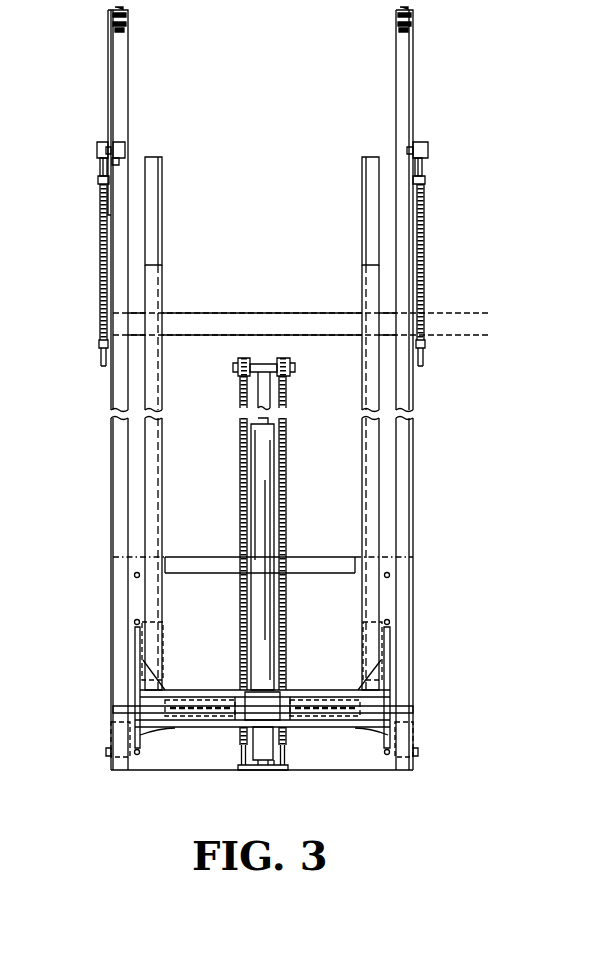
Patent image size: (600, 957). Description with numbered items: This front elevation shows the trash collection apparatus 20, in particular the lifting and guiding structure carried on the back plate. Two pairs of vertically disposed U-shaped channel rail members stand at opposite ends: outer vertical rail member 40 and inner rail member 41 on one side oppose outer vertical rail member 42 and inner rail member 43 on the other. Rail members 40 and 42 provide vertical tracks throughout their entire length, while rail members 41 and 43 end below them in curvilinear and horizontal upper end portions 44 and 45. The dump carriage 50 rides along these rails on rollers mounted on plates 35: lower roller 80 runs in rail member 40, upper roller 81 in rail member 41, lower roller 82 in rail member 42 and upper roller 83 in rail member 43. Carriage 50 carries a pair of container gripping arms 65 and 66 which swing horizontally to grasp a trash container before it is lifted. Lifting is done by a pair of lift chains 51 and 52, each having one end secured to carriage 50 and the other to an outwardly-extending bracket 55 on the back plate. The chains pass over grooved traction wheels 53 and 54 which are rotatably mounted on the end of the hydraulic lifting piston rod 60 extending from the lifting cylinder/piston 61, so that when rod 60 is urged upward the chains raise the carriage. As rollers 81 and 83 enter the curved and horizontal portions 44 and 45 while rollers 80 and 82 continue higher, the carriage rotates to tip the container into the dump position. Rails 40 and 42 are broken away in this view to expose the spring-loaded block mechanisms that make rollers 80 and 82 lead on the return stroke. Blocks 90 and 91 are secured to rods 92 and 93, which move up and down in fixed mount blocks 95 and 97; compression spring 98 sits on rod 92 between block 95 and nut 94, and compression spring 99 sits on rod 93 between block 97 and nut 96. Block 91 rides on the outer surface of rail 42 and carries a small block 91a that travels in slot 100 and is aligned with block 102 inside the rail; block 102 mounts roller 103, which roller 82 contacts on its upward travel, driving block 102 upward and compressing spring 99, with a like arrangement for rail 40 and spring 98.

The trash collection apparatus 20 is at (444, 100).
The plates 35 is at (134, 656).
The vertical rail member 40 is at (394, 48).
The rail member 41 is at (372, 285).
The vertical rail member 42 is at (128, 52).
The rail member 43 is at (150, 285).
The curvilinear and horizontal upper end portion 44 is at (372, 160).
The curvilinear and horizontal upper end portion 45 is at (152, 160).
The dump carriage 50 is at (323, 728).
The lift chain 51 is at (287, 437).
The lift chain 52 is at (238, 437).
The grooved traction wheel 53 is at (286, 362).
The grooved traction wheel 54 is at (240, 362).
The outwardly-extending bracket 55 is at (255, 772).
The hydraulic lifting piston rod 60 is at (266, 387).
The lifting cylinder/piston 61 is at (261, 475).
The container gripping arm 65 is at (312, 694).
The container gripping arm 66 is at (222, 694).
The roller 80 is at (402, 738).
The roller 81 is at (368, 633).
The roller 82 is at (108, 735).
The roller 83 is at (152, 633).
The block 90 is at (428, 146).
The block 91 is at (97, 146).
The small block 91a is at (107, 147).
The rod 92 is at (422, 167).
The rod 93 is at (99, 170).
The nut 94 is at (424, 344).
The fixed mount block 95 is at (424, 182).
The nut 96 is at (98, 344).
The fixed mount block 97 is at (99, 180).
The compression spring 98 is at (424, 238).
The compression spring 99 is at (100, 240).
The slot 100 is at (110, 50).
The block 102 is at (125, 146).
The roller 103 is at (118, 163).